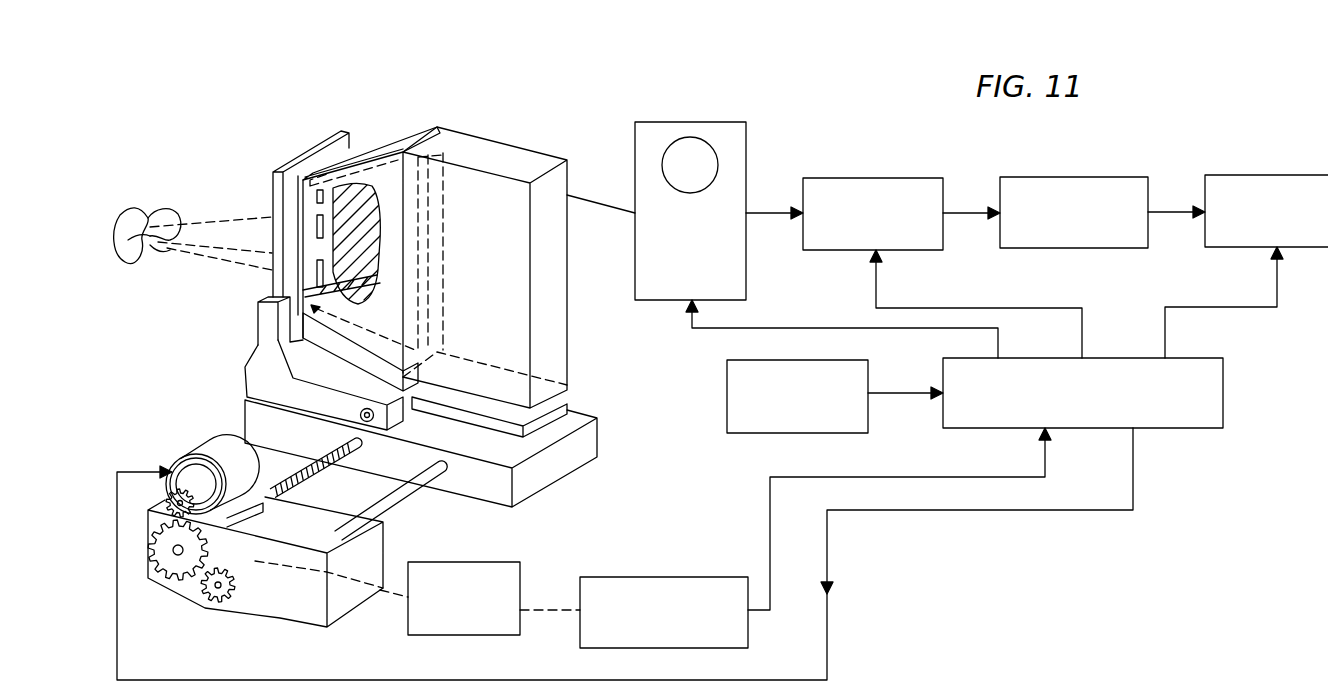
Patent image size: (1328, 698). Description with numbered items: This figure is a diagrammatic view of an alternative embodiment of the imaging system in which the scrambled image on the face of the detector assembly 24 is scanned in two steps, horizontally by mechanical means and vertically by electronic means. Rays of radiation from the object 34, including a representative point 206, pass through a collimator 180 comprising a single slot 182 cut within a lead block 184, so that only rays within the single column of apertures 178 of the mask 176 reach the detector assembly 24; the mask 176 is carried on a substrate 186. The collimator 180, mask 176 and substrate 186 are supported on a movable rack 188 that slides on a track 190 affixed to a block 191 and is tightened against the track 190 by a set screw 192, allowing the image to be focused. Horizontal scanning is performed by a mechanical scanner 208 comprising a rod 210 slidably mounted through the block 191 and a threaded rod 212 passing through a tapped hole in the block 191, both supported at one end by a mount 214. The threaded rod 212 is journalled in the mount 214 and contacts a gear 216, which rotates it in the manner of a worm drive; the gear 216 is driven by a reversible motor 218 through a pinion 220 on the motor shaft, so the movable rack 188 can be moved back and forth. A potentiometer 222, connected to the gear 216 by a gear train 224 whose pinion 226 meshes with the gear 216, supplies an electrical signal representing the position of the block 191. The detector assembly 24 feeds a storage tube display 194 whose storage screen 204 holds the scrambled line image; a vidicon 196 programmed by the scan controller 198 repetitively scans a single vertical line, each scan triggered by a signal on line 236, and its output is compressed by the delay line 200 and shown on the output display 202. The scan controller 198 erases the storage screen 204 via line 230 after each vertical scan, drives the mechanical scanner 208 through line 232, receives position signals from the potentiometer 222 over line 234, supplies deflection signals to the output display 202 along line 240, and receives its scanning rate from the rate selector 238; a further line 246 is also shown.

The object 34 is at (133, 217).
The point 206 is at (143, 249).
The mask 176 is at (308, 208).
The apertures 178 is at (320, 233).
The substrate 186 is at (303, 155).
The collimator 180 is at (392, 140).
The detector assembly 24 is at (517, 152).
The slot 182 is at (423, 230).
The lead block 184 is at (359, 352).
The movable rack 188 is at (252, 375).
The track 190 is at (548, 413).
The block 191 is at (588, 452).
The set screw 192 is at (362, 418).
The mechanical scanner 208 is at (157, 448).
The motor 218 is at (225, 440).
The pinion 220 is at (172, 497).
The threaded rod 212 is at (316, 467).
The rod 210 is at (404, 482).
The mount 214 is at (380, 553).
The gear 216 is at (178, 582).
The pinion 226 is at (220, 603).
The gear train 224 is at (492, 568).
The potentiometer 222 is at (652, 583).
The storage screen 204 is at (702, 137).
The storage tube display 194 is at (748, 138).
The vidicon 196 is at (880, 178).
The delay line 200 is at (1078, 177).
The output display 202 is at (1270, 176).
The line 230 is at (765, 328).
The line 236 is at (937, 308).
The line 240 is at (1165, 347).
The scan controller 198 is at (1219, 412).
The rate selector 238 is at (795, 433).
The line 234 is at (771, 568).
The line 232 is at (829, 642).
The line 246 is at (1045, 697).